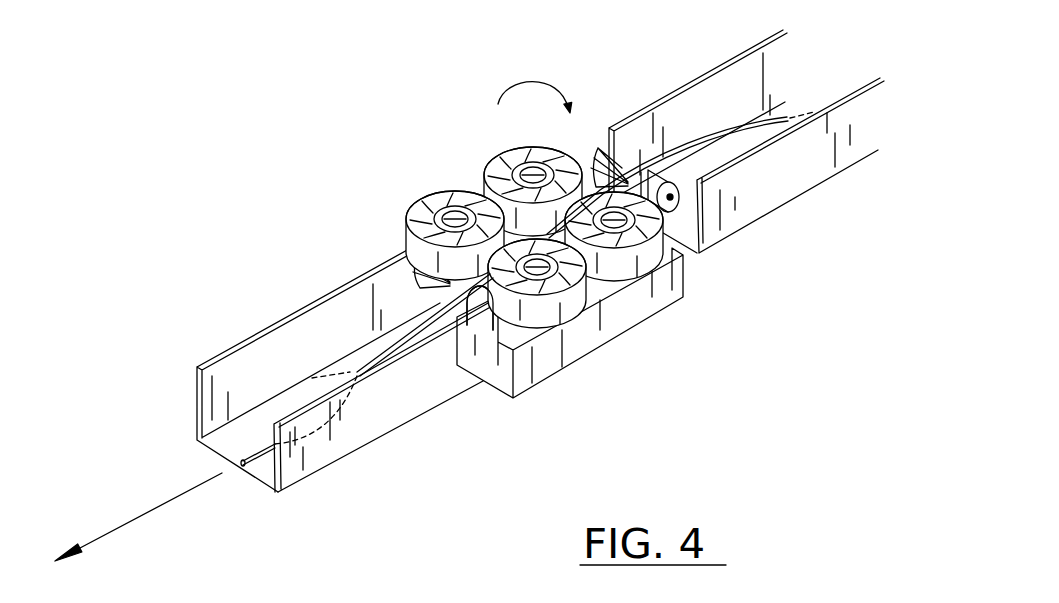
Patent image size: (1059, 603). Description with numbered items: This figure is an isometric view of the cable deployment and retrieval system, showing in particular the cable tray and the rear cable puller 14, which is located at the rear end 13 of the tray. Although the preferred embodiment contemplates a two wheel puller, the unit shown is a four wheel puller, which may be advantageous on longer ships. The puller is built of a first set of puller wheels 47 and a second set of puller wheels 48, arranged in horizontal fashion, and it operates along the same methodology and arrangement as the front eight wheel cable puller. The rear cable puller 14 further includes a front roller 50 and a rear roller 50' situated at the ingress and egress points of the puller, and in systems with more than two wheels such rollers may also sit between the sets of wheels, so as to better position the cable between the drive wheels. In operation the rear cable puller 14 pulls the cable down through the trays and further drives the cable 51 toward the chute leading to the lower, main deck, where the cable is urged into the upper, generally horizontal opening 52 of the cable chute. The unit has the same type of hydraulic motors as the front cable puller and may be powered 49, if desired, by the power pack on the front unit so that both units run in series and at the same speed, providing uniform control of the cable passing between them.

The rear end of the tray 13 is at (691, 104).
The rear cable puller 14 is at (422, 208).
The first set of puller wheels 47 is at (492, 156).
The second set of puller wheels 48 is at (657, 268).
The powering of the rear cable puller 49 is at (538, 122).
The front roller 50 is at (733, 241).
The rear roller 50' is at (506, 377).
The cable driven to the chute 51 is at (156, 558).
The upper horizontal opening of the cable chute 52 is at (466, 291).